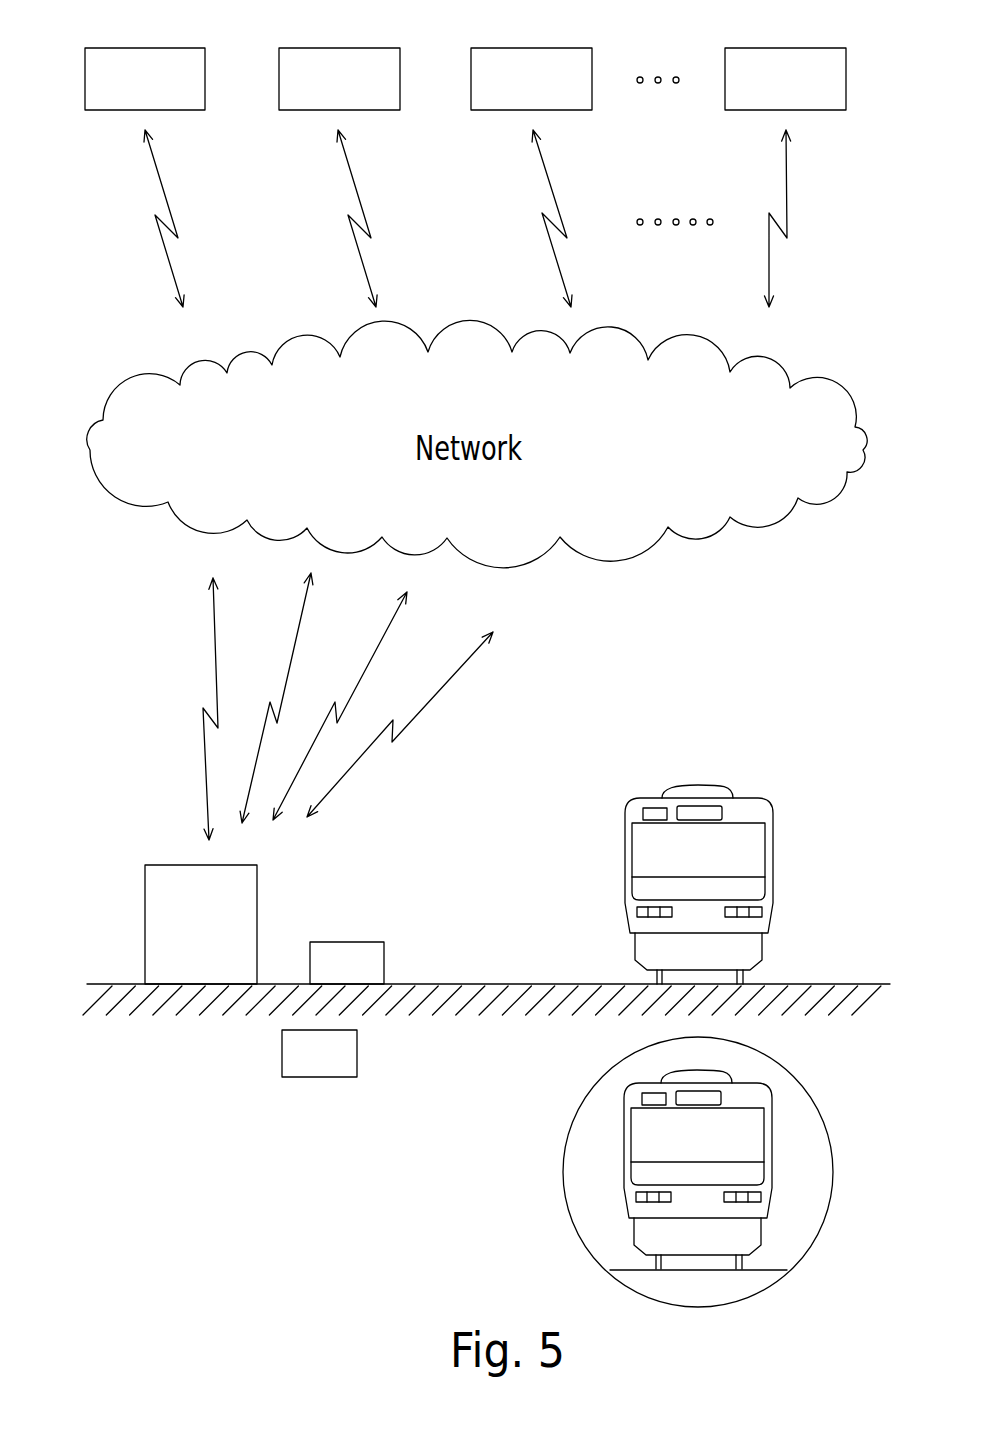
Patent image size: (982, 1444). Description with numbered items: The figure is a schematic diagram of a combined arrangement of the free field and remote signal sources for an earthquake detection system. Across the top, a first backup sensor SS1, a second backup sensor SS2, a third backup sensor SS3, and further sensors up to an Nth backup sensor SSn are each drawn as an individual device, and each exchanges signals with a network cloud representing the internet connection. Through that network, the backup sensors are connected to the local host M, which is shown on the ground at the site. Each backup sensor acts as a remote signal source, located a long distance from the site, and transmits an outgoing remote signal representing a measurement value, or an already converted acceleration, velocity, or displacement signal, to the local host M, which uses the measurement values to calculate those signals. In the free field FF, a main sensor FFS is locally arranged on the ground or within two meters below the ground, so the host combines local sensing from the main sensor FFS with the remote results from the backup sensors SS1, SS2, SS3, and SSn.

The first backup sensor SS1 is at (113, 48).
The second backup sensor SS2 is at (307, 48).
The third backup sensor SS3 is at (498, 48).
The Nth backup sensor SSn is at (753, 48).
The local host M is at (200, 865).
The main sensor FFS is at (384, 960).
The free field FF is at (565, 984).